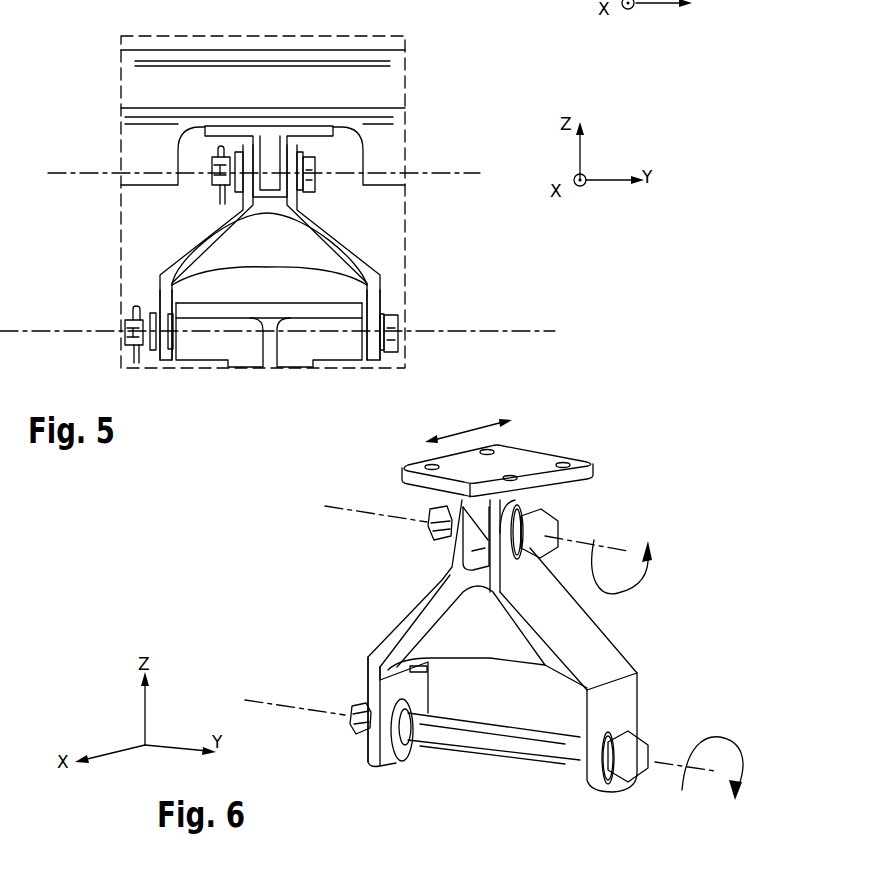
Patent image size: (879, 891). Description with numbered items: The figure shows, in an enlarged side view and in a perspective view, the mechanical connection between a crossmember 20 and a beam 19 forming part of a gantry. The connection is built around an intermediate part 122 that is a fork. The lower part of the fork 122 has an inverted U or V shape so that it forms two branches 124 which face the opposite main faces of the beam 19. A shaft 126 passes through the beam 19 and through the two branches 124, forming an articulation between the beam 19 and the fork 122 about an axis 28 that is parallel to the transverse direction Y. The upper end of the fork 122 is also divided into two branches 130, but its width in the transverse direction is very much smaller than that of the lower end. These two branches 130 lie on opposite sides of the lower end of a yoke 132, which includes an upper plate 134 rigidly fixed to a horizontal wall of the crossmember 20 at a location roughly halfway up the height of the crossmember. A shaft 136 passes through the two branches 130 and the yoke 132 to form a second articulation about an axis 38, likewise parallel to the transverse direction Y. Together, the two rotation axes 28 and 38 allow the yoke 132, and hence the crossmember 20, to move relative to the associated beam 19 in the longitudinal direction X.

In FIG. 5, the beam 19 is at (327, 314).
In FIG. 5, the crossmember 20 is at (302, 80).
In FIG. 5, the axis 28 is at (553, 328).
In FIG. 6, the axis 28 is at (273, 708).
In FIG. 5, the axis 38 is at (470, 172).
In FIG. 5, the intermediate part 122 is at (290, 251).
In FIG. 6, the intermediate part 122 is at (569, 632).
In FIG. 5, the branches 124 is at (162, 293).
In FIG. 6, the branches 124 is at (390, 688).
In FIG. 5, the shaft 126 is at (125, 330).
In FIG. 6, the shaft 126 is at (442, 733).
In FIG. 5, the branches 130 is at (243, 192).
In FIG. 6, the branches 130 is at (453, 552).
In FIG. 5, the yoke 132 is at (278, 133).
In FIG. 6, the yoke 132 is at (430, 525).
In FIG. 5, the upper plate 134 is at (237, 126).
In FIG. 6, the upper plate 134 is at (538, 462).
In FIG. 5, the shaft 136 is at (210, 165).